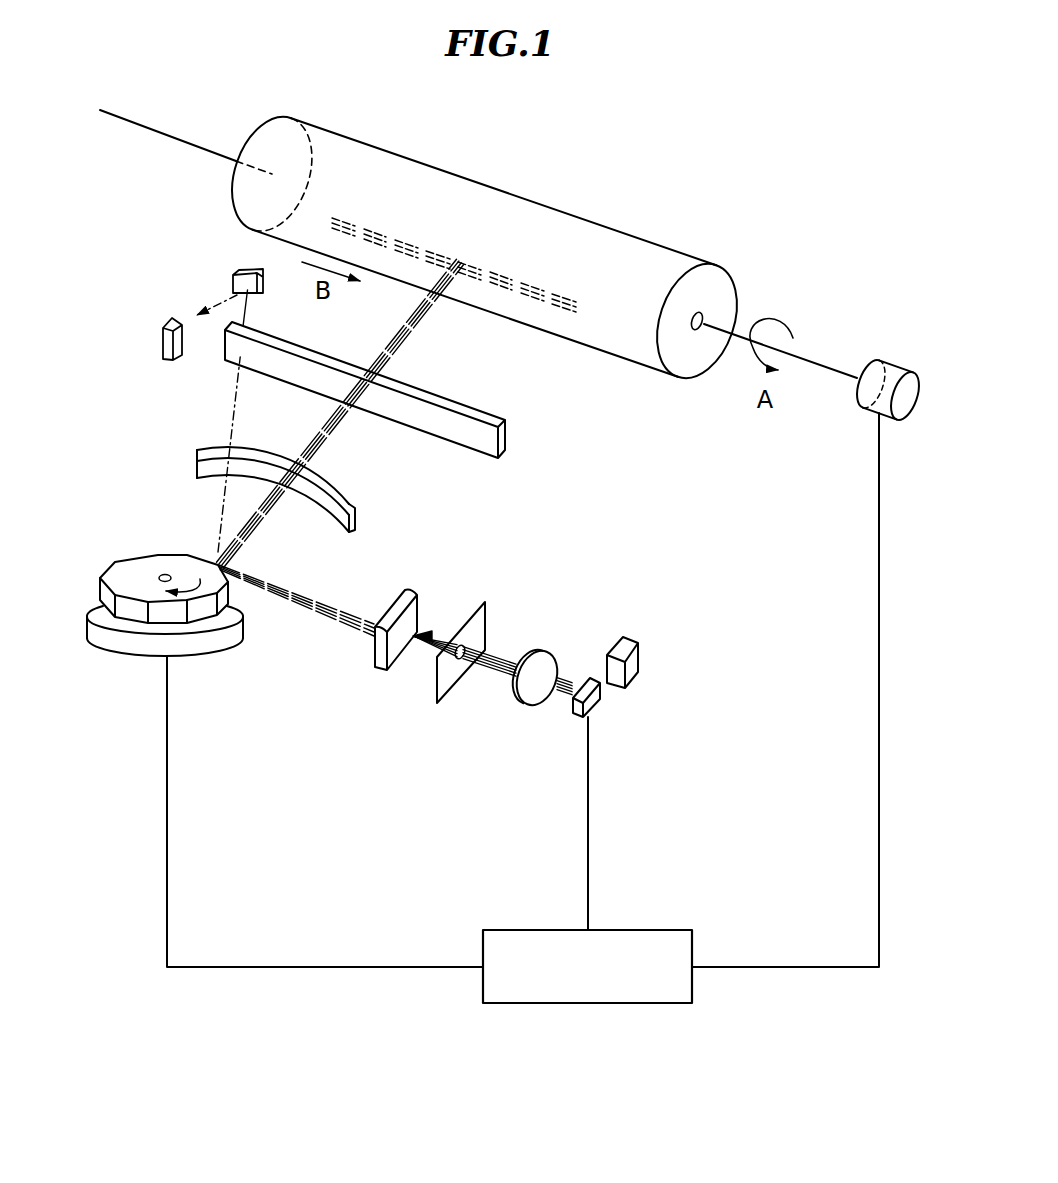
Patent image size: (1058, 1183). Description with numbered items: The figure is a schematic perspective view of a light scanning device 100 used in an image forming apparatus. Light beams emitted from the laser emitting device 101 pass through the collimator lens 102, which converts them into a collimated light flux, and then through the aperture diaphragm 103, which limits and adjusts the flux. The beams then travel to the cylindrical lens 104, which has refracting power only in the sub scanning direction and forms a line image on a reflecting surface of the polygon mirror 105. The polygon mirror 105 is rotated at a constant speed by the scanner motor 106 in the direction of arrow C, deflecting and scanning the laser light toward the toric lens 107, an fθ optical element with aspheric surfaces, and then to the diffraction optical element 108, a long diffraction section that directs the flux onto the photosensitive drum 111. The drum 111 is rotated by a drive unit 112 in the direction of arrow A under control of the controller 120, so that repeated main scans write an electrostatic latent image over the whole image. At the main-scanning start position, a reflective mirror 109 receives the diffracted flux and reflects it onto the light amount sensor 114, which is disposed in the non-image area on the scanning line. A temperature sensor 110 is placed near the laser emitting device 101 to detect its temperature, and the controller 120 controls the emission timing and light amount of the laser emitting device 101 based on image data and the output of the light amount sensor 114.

The light scanning device 100 is at (776, 862).
The laser emitting device 101 is at (596, 700).
The collimator lens 102 is at (541, 650).
The aperture diaphragm 103 is at (485, 602).
The cylindrical lens 104 is at (407, 589).
The polygon mirror 105 is at (138, 565).
The scanner motor 106 is at (101, 654).
The toric lens 107 is at (351, 491).
The diffraction optical element 108 is at (507, 436).
The reflective mirror 109 is at (231, 279).
The temperature sensor 110 is at (627, 636).
The photosensitive drum 111 is at (518, 205).
The drive unit 112 is at (884, 362).
The light amount sensor 114 is at (166, 362).
The controller 120 is at (517, 929).